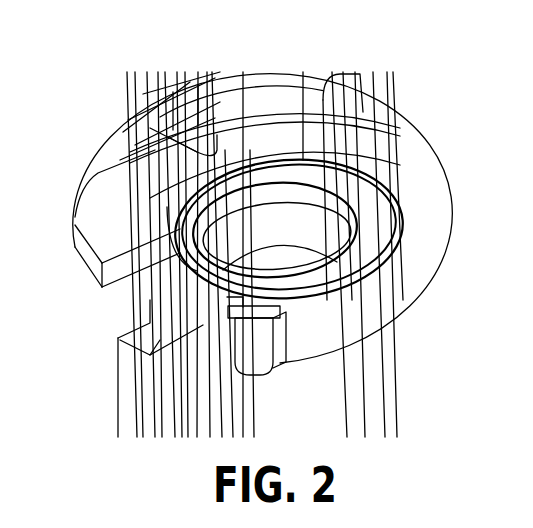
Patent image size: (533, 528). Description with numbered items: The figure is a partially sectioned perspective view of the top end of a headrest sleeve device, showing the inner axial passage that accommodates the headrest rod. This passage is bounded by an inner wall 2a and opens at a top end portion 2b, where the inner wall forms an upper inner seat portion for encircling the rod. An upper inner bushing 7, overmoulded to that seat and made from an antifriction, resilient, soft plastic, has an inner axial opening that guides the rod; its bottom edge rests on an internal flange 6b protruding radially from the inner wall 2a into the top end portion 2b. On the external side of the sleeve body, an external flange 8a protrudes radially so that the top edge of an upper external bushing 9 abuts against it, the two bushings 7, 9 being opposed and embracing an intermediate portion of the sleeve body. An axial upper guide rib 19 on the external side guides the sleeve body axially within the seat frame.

The inner wall 2a is at (297, 122).
The top end portion 2b is at (270, 146).
The internal flange 6b is at (241, 160).
The upper inner bushing 7 is at (255, 351).
The external flange 8a is at (452, 193).
The upper external bushing 9 is at (297, 235).
The axial upper guide rib 19 is at (132, 335).